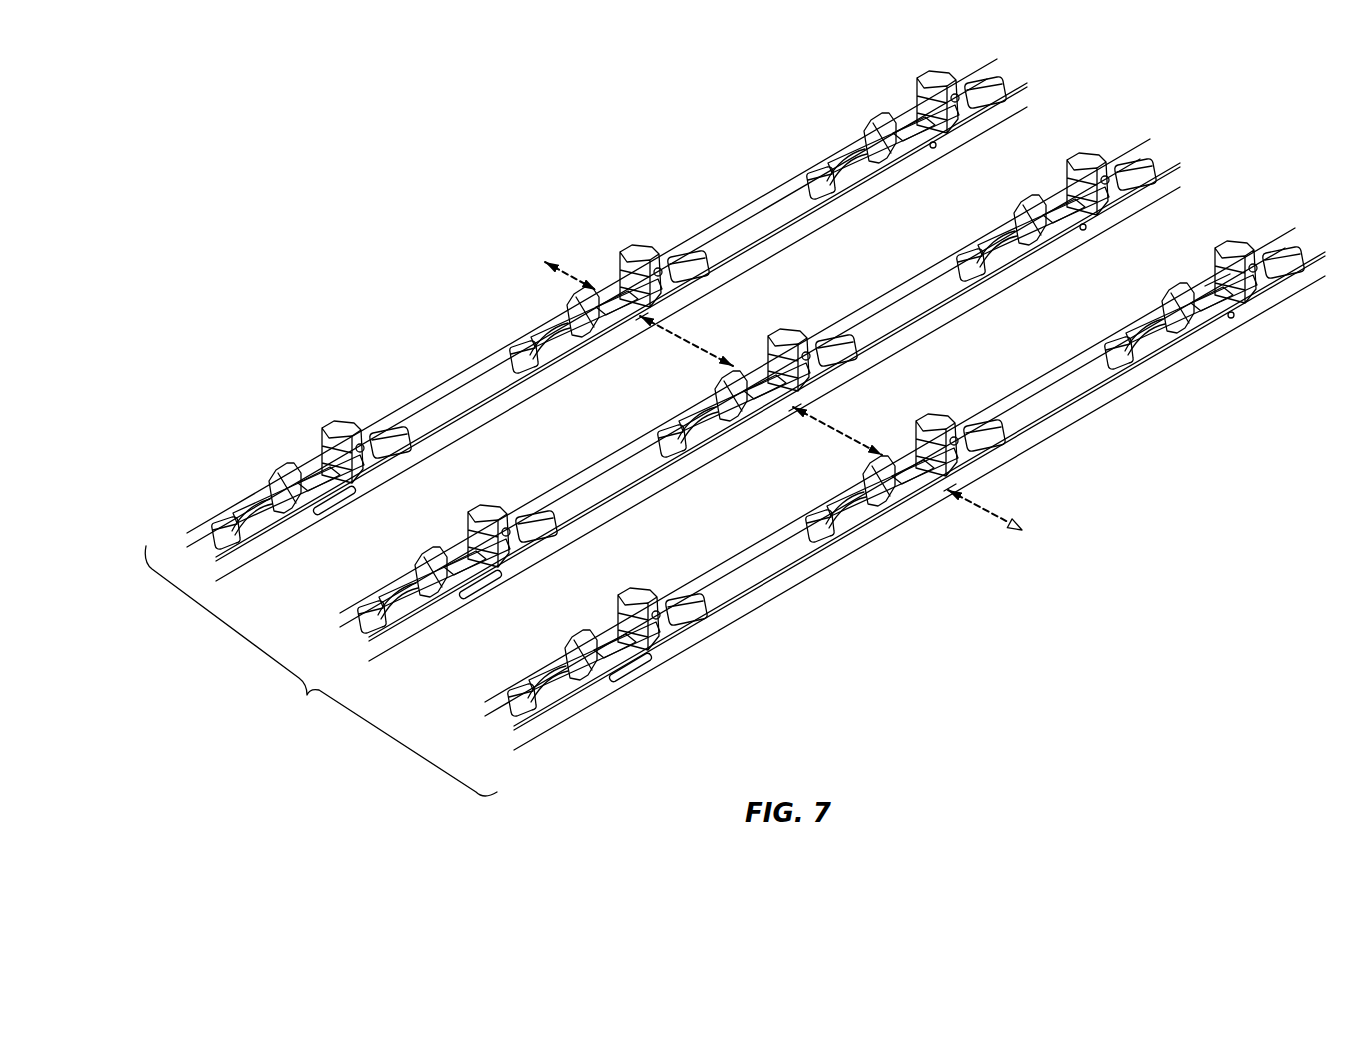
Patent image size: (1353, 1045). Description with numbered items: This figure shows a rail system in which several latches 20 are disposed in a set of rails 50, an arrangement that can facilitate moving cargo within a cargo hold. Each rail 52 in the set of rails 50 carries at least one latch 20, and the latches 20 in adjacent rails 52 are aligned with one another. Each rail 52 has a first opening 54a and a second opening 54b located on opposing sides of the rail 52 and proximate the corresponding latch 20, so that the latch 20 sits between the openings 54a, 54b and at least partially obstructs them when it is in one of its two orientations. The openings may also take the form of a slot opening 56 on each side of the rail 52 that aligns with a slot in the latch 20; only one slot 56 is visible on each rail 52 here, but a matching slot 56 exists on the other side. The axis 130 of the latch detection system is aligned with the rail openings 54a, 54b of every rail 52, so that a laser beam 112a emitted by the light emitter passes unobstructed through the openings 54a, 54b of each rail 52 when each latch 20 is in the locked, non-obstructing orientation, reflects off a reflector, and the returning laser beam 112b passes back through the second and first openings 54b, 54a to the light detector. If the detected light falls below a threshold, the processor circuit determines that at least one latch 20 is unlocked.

The latch 20 is at (308, 442).
The set of rails 50 is at (321, 671).
The rail 52 is at (488, 427).
The first opening 54a is at (640, 317).
The second opening 54b is at (1200, 284).
The slot opening 56 is at (637, 670).
The laser beam 112a is at (840, 457).
The laser beam 112b is at (785, 455).
The axis 130 is at (998, 497).